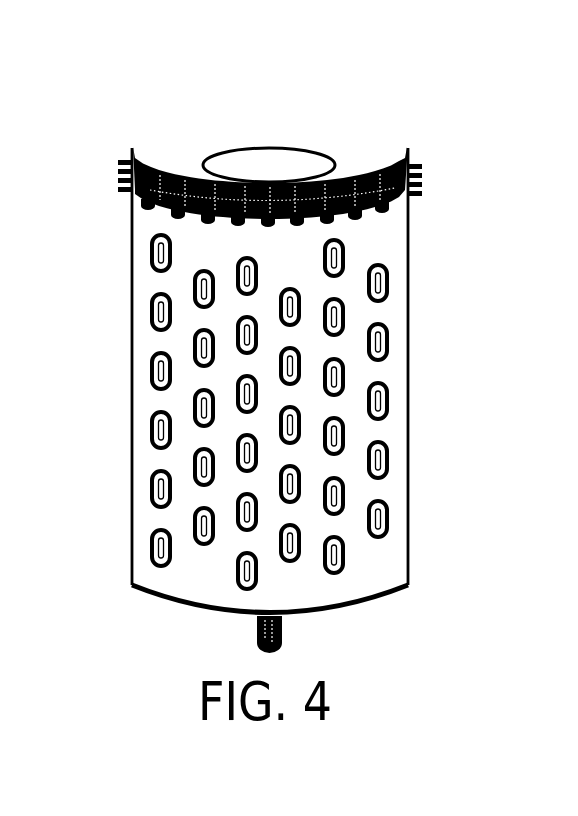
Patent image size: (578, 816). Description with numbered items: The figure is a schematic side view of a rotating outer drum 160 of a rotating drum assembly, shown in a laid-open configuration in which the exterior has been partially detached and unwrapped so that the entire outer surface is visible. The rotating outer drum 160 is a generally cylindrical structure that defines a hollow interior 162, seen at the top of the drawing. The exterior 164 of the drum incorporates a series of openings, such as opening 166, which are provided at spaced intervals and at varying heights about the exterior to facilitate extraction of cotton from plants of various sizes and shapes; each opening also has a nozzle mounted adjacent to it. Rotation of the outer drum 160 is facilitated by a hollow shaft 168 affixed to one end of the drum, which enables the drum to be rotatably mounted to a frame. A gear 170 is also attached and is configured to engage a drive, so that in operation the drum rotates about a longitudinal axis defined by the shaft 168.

The rotating outer drum 160 is at (363, 149).
The hollow interior 162 is at (268, 160).
The exterior 164 is at (392, 237).
The opening 166 is at (388, 283).
The hollow shaft 168 is at (283, 640).
The gear 170 is at (422, 178).